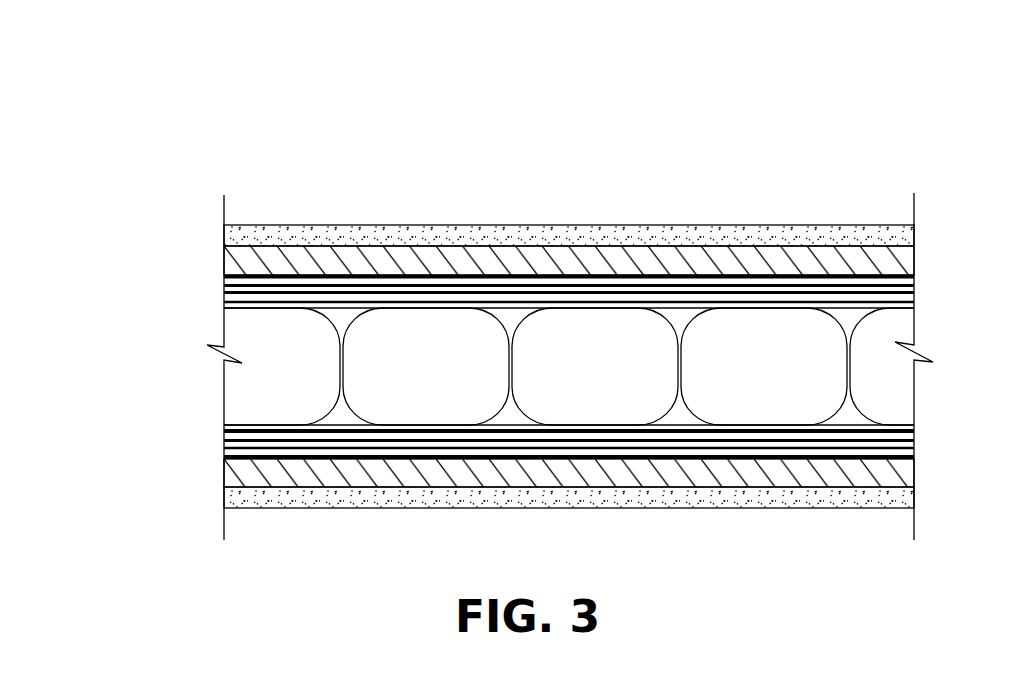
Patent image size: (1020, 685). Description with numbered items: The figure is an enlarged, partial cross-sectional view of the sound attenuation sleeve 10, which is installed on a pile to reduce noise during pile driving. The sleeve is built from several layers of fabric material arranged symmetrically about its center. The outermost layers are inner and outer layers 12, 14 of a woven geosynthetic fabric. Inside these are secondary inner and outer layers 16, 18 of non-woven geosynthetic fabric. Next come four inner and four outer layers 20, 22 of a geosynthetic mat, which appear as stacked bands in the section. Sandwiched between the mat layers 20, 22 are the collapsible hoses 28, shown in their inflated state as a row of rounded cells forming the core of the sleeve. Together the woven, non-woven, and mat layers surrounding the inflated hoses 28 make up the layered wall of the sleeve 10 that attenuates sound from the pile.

The sound attenuation sleeve 10 is at (637, 198).
The inner layer of woven geosynthetic fabric 12 is at (270, 235).
The outer layer of woven geosynthetic fabric 14 is at (277, 498).
The secondary inner layer of non-woven geosynthetic fabric 16 is at (232, 266).
The secondary outer layer of non-woven geosynthetic fabric 18 is at (230, 478).
The inner layers of geosynthetic mat 20 is at (228, 290).
The outer layers of geosynthetic mat 22 is at (228, 444).
The collapsible hoses 28 is at (240, 388).